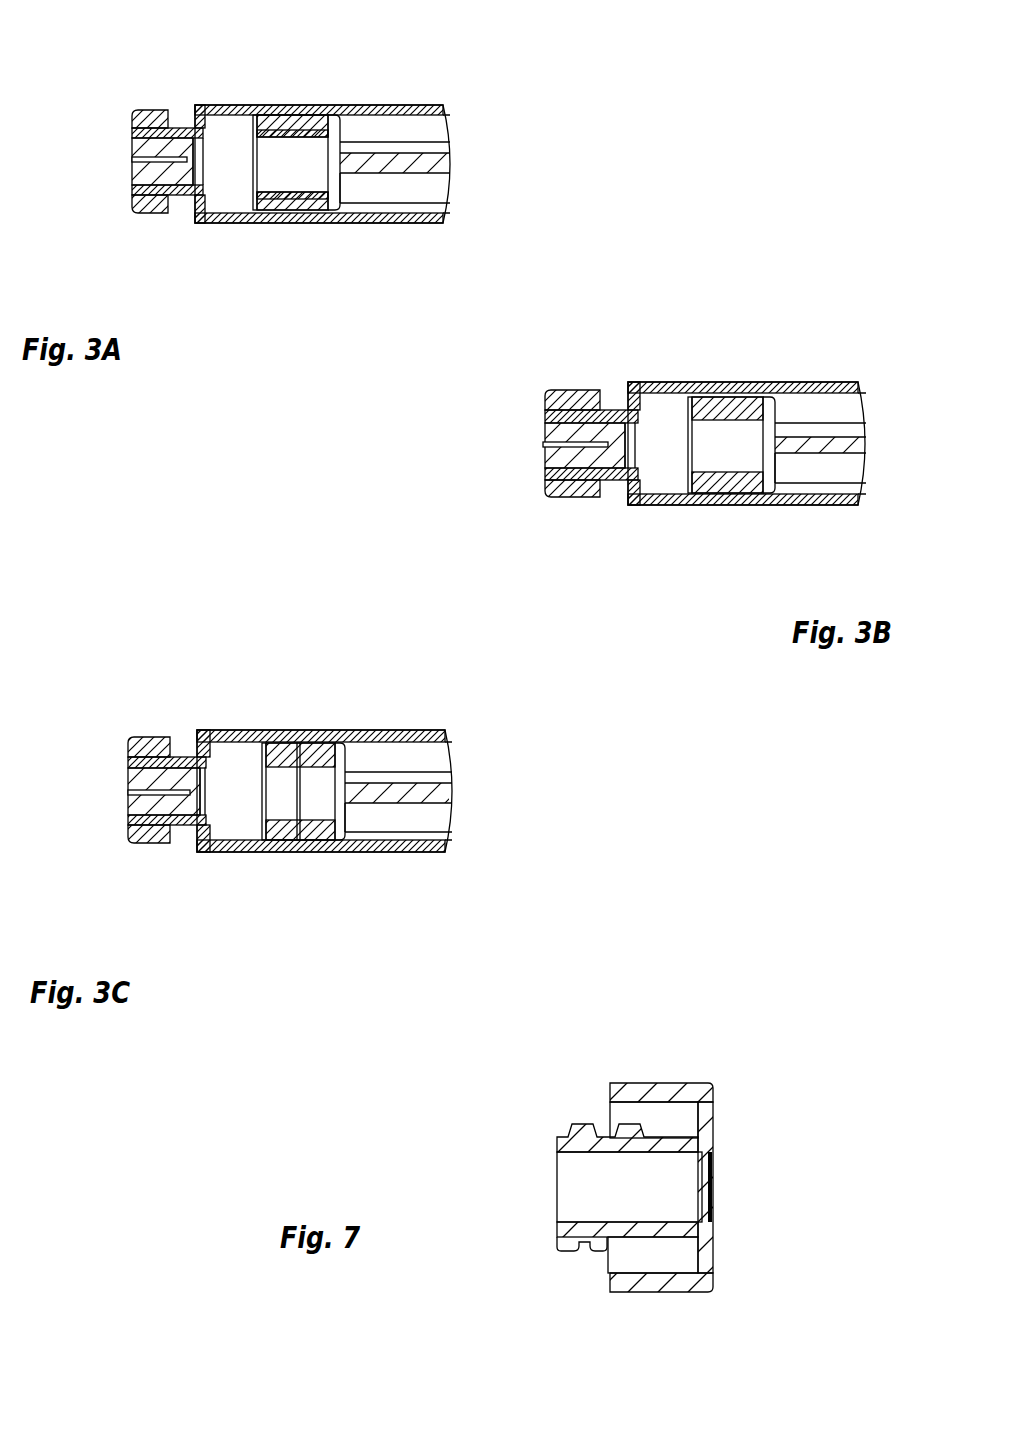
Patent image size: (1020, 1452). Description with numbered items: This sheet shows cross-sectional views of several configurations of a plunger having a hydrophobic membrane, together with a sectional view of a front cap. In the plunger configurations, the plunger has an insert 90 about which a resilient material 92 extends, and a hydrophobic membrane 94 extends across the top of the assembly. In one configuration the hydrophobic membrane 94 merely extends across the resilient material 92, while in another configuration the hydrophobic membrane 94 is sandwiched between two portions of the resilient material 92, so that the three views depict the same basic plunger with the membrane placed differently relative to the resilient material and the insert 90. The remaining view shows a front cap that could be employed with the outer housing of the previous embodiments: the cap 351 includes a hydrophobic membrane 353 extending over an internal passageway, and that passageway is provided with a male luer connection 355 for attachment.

In FIG. 3A, the insert 90 is at (268, 195).
In FIG. 3A, the resilient material 92 is at (297, 125).
In FIG. 3B, the resilient material 92 is at (735, 397).
In FIG. 3C, the resilient material 92 is at (280, 755).
In FIG. 3A, the hydrophobic membrane 94 is at (253, 153).
In FIG. 3B, the hydrophobic membrane 94 is at (688, 455).
In FIG. 3C, the hydrophobic membrane 94 is at (298, 795).
In FIG. 7, the cap 351 is at (647, 1153).
In FIG. 7, the hydrophobic membrane 353 is at (712, 1197).
In FIG. 7, the male luer connection 355 is at (558, 1246).